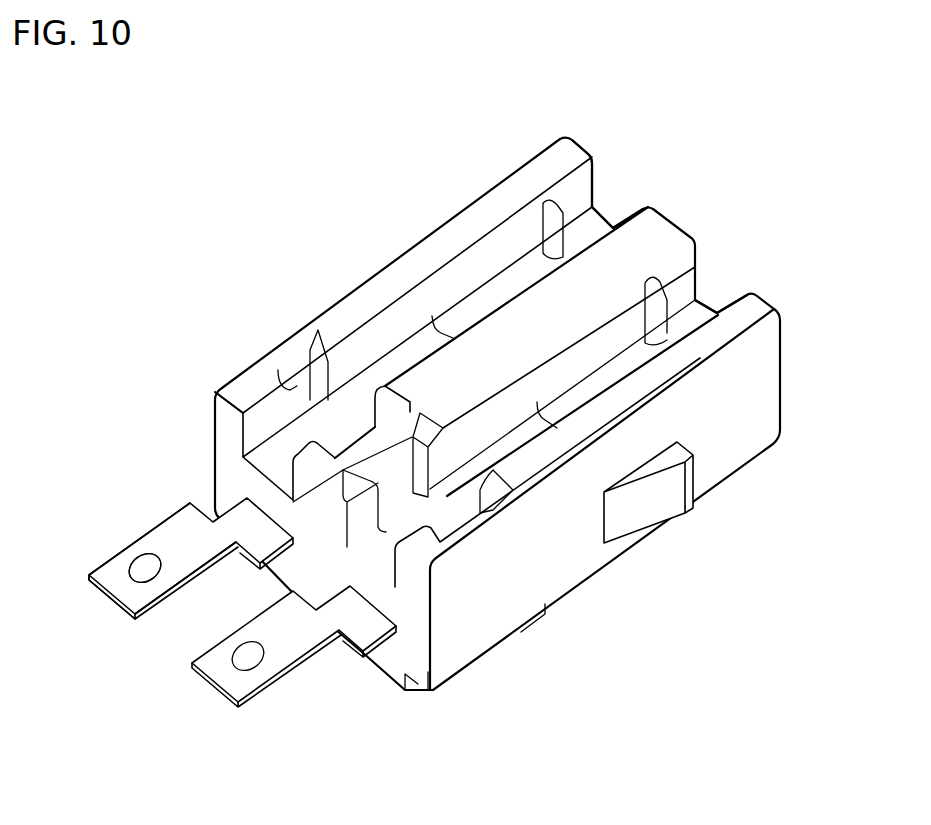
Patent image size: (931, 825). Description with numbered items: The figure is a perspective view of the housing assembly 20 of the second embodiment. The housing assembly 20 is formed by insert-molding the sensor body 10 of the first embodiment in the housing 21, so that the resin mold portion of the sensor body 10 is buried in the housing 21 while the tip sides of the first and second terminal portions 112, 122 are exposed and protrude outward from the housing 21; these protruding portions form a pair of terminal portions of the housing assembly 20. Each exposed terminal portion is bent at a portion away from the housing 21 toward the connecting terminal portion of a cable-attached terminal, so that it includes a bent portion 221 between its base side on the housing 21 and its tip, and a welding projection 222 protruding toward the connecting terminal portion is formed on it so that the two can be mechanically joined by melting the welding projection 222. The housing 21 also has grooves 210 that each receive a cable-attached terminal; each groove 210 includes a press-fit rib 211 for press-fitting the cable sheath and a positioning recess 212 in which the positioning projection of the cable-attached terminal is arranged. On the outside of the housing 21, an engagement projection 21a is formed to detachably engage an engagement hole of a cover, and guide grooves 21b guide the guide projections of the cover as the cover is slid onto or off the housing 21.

The sensor body 10 is at (100, 561).
The housing assembly 20 is at (787, 330).
The housing 21 is at (293, 335).
The engagement projection 21a is at (662, 510).
The guide groove 21b is at (410, 690).
The groove 210 is at (617, 205).
The press-fit rib 211 is at (587, 153).
The positioning recess 212 is at (265, 386).
The first terminal portion 112 is at (157, 527).
The second terminal portion 122 is at (287, 675).
The bent portion 221 is at (240, 560).
The welding projection 222 is at (140, 573).